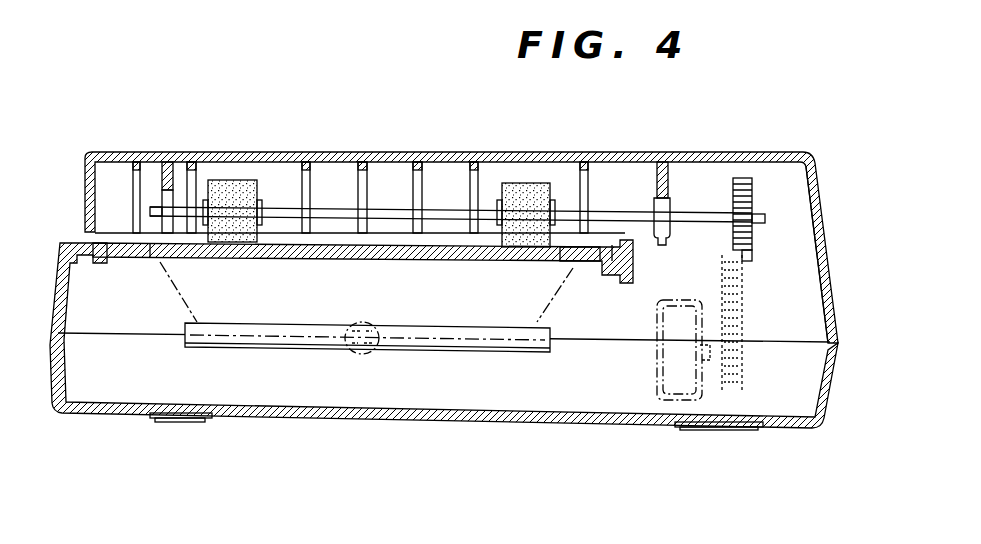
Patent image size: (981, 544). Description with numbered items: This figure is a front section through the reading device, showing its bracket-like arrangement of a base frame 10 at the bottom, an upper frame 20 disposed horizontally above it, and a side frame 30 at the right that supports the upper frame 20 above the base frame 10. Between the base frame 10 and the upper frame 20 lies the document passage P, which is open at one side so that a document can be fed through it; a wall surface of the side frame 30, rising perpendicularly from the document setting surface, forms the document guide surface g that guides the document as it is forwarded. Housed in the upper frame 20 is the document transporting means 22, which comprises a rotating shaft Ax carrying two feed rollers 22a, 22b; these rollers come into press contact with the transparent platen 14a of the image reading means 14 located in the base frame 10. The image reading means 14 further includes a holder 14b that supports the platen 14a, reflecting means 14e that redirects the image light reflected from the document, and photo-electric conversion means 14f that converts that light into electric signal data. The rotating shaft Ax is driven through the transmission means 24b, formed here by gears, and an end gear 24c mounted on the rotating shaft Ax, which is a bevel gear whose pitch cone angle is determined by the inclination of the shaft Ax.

The base frame 10 is at (404, 418).
The image reading means 14 is at (444, 388).
The transparent platen 14a is at (187, 263).
The holder 14b is at (120, 365).
The reflecting means 14e is at (240, 347).
The photo-electric conversion means 14f is at (348, 350).
The upper frame 20 is at (190, 140).
The document transporting means 22 is at (457, 145).
The feed roller 22a is at (492, 170).
The feed roller 22b is at (262, 180).
The rotating shaft Ax is at (385, 208).
The document guide surface g is at (612, 245).
The transmission means 24b is at (745, 300).
The end gear 24c is at (733, 200).
The side frame 30 is at (752, 142).
The document passage P is at (123, 233).